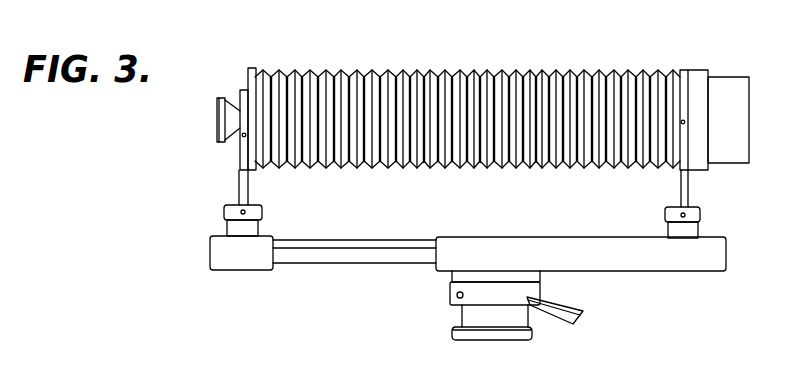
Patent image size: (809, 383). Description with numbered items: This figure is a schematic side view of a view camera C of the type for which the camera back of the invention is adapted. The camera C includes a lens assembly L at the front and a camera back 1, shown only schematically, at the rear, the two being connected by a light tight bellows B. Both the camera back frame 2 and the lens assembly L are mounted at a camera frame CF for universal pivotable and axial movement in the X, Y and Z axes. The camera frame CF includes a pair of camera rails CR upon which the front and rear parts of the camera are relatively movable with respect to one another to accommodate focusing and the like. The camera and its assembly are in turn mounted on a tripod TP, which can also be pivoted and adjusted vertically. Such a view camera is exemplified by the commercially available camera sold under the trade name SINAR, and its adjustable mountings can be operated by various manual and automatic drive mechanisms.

The lens assembly L is at (215, 132).
The light tight bellows B is at (488, 70).
The camera C is at (512, 60).
The camera back frame 2 is at (686, 70).
The camera back 1 is at (761, 42).
The camera rails CR is at (367, 240).
The camera frame CF is at (473, 228).
The tripod TP is at (441, 302).